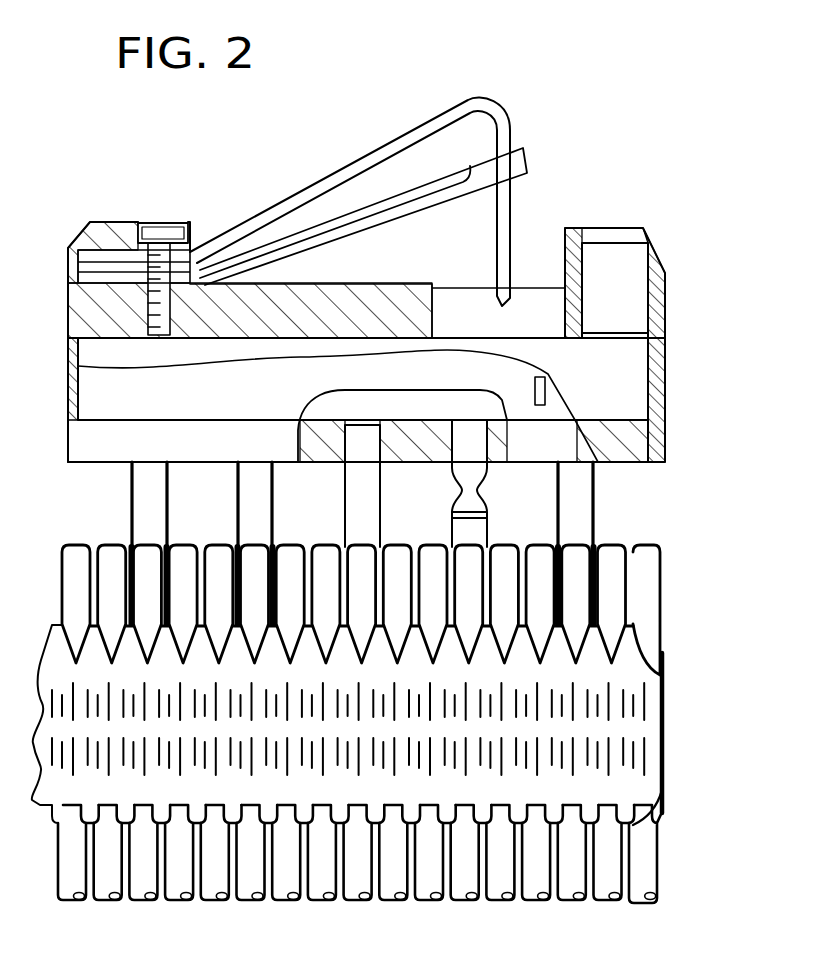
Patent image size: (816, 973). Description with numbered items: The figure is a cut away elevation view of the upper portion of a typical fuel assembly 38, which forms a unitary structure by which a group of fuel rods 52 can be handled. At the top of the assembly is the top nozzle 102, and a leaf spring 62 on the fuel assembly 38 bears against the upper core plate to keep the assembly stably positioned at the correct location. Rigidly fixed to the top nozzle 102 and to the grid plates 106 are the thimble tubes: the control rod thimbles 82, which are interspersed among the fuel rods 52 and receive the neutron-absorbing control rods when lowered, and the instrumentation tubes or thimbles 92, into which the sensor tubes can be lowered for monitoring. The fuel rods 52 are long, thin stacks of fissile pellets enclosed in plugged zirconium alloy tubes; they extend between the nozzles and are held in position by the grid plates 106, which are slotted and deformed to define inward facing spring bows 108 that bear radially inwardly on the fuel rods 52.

The fuel assembly 38 is at (667, 212).
The leaf spring 62 is at (318, 250).
The top nozzle 102 is at (633, 383).
The instrumentation tube or thimble 92 is at (462, 530).
The control rod thimble tube 82 is at (585, 509).
The fuel rod 52 is at (617, 591).
The grid plate 106 is at (633, 793).
The spring bow 108 is at (590, 705).